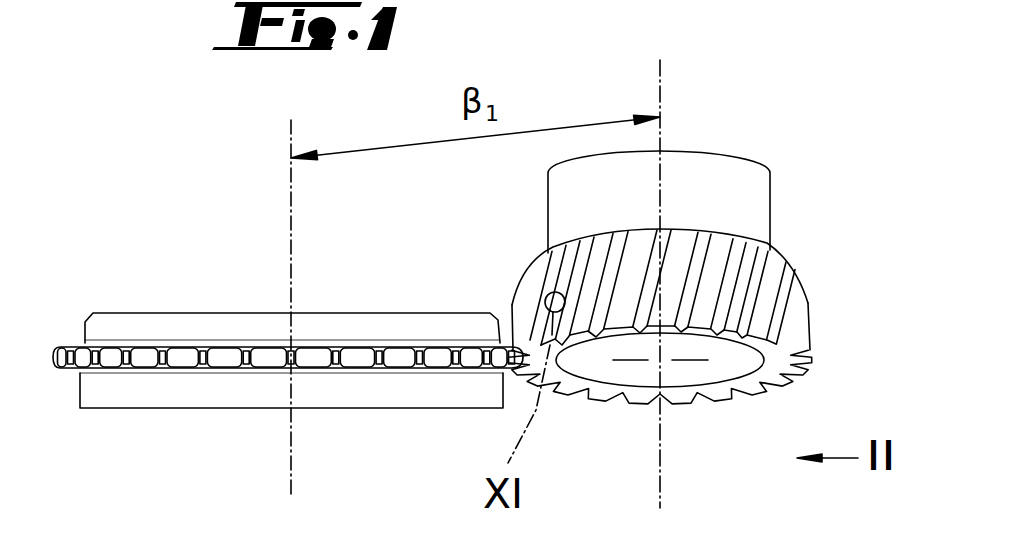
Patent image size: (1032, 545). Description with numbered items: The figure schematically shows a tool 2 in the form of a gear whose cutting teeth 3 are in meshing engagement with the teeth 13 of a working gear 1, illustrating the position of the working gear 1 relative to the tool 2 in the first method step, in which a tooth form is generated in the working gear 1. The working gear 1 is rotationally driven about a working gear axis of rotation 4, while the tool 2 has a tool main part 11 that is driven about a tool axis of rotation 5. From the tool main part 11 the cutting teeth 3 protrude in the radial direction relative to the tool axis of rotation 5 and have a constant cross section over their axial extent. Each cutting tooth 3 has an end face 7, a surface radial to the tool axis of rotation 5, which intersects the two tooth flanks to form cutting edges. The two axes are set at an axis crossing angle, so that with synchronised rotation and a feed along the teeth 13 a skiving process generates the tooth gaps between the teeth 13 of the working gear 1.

The working gear 1 is at (288, 276).
The teeth 13 is at (178, 357).
The working gear axis of rotation 4 is at (293, 286).
The tool 2 is at (691, 282).
The tool main part 11 is at (748, 222).
The cutting teeth 3 is at (828, 314).
The end face 7 is at (595, 390).
The tool axis of rotation 5 is at (660, 470).